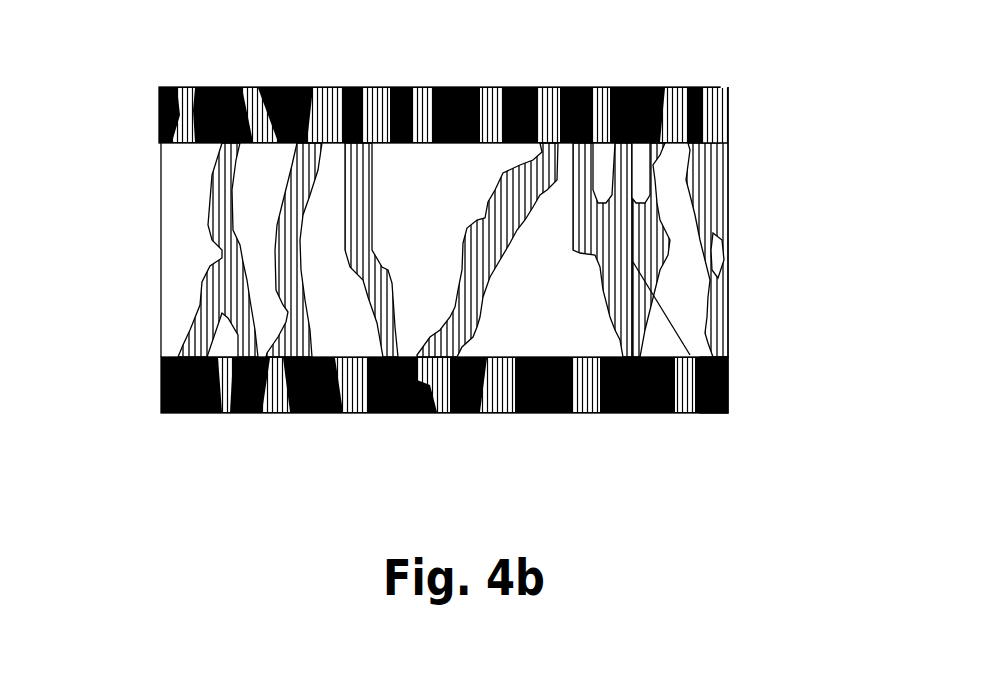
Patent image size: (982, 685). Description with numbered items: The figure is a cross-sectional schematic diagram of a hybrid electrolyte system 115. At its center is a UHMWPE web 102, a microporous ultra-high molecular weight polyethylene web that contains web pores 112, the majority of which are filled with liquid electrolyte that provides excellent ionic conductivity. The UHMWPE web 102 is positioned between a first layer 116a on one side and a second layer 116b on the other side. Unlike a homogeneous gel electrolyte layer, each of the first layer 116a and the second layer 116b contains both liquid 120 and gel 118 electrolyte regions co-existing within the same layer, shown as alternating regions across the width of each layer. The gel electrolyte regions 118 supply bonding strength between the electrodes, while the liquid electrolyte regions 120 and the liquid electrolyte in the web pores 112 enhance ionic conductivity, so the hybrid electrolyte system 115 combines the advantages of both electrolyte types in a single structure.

The UHMWPE web 102 is at (553, 318).
The web pores 112 is at (728, 415).
The hybrid electrolyte system 115 is at (196, 502).
The first layer 116a is at (730, 125).
The second layer 116b is at (728, 385).
The gel electrolyte regions 118 is at (422, 87).
The liquid electrolyte regions 120 is at (188, 102).